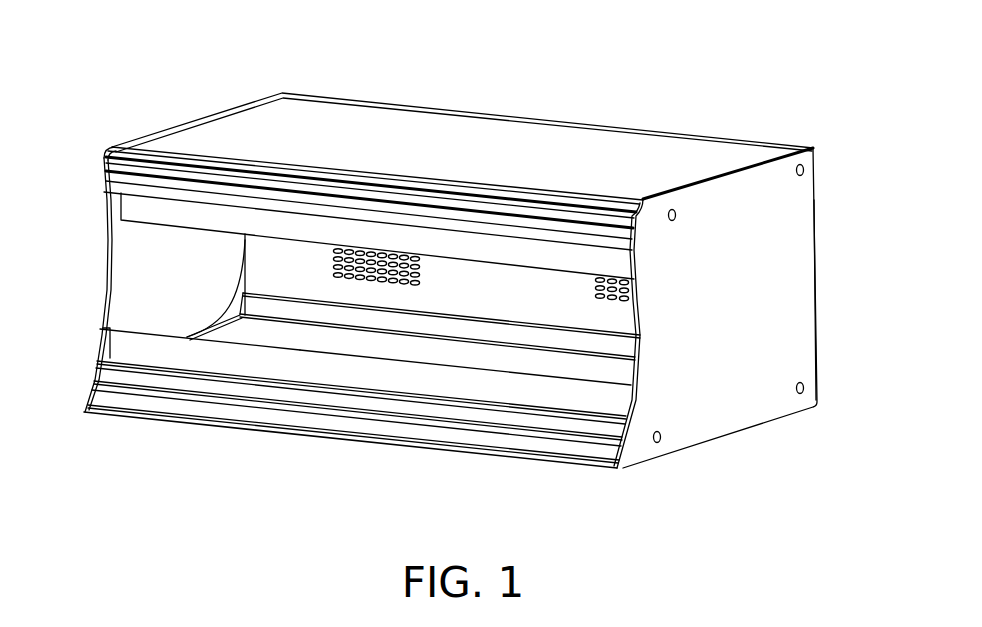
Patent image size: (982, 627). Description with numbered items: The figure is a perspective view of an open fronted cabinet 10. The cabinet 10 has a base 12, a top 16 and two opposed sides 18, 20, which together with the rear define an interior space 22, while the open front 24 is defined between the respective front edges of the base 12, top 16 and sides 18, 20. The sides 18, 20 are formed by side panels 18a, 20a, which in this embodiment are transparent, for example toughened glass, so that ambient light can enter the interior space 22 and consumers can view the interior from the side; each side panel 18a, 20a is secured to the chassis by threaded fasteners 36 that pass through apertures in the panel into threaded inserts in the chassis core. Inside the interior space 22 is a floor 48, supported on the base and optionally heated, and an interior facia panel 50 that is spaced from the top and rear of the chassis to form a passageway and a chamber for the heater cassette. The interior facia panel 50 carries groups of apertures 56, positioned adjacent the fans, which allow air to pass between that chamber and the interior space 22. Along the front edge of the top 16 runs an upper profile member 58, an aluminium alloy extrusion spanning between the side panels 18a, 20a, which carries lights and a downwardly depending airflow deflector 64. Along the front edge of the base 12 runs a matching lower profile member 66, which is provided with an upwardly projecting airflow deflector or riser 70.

The cabinet 10 is at (388, 86).
The base 12 is at (473, 465).
The top 16 is at (496, 150).
The side 18 is at (762, 303).
The side panel 18a is at (802, 332).
The side 20 is at (96, 238).
The side panel 20a is at (110, 273).
The interior space 22 is at (264, 270).
The open front 24 is at (272, 338).
The threaded fasteners 36 is at (805, 170).
The floor 48 is at (347, 340).
The interior facia panel 50 is at (486, 299).
The apertures 56 is at (340, 271).
The upper profile member 58 is at (190, 166).
The airflow deflector 64 is at (153, 213).
The lower profile member 66 is at (413, 433).
The airflow deflector or riser 70 is at (565, 395).